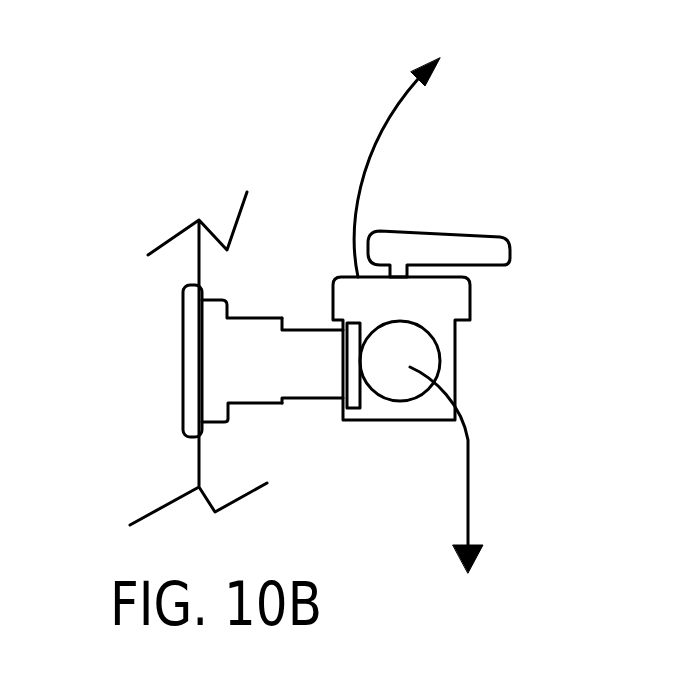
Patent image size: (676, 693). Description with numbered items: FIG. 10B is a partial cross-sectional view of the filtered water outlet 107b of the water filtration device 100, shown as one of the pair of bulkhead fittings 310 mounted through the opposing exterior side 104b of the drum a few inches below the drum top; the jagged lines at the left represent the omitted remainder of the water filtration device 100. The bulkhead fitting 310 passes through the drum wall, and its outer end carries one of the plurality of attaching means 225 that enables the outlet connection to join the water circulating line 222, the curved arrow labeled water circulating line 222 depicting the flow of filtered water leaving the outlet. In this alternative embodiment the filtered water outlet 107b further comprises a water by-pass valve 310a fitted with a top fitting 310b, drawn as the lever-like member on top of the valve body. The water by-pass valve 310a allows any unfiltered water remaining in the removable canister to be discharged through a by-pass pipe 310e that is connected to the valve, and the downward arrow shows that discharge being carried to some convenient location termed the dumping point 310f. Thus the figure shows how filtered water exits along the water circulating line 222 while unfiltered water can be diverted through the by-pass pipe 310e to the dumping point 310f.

The water filtration device 100 is at (88, 217).
The opposing exterior side 104b is at (200, 273).
The filtered water outlet 107b is at (225, 412).
The water circulating line 222 is at (430, 150).
The attaching means 225 is at (282, 405).
The bulkhead fittings 310 is at (183, 308).
The water by-pass valve 310a is at (453, 375).
The top fitting 310b is at (421, 233).
The by-pass pipe 310e is at (470, 492).
The dumping point 310f is at (479, 584).